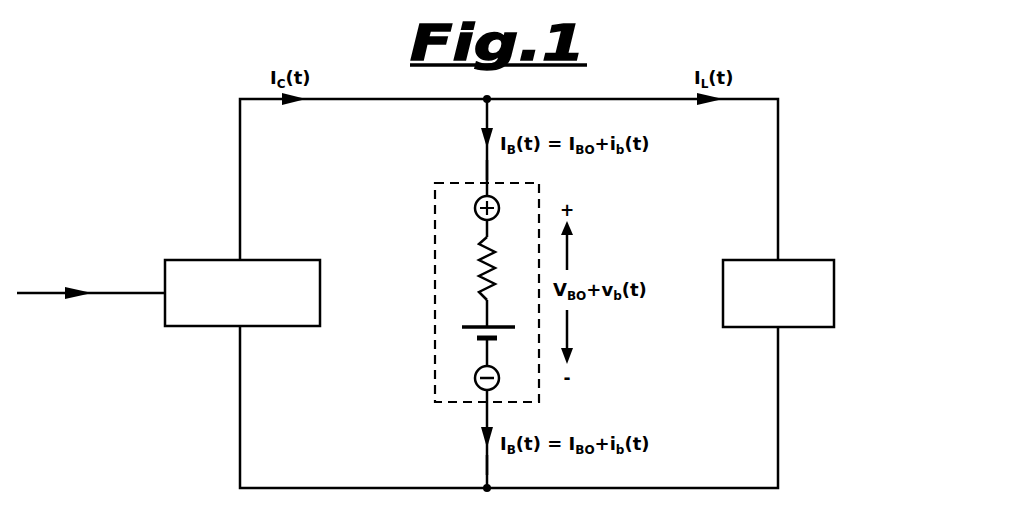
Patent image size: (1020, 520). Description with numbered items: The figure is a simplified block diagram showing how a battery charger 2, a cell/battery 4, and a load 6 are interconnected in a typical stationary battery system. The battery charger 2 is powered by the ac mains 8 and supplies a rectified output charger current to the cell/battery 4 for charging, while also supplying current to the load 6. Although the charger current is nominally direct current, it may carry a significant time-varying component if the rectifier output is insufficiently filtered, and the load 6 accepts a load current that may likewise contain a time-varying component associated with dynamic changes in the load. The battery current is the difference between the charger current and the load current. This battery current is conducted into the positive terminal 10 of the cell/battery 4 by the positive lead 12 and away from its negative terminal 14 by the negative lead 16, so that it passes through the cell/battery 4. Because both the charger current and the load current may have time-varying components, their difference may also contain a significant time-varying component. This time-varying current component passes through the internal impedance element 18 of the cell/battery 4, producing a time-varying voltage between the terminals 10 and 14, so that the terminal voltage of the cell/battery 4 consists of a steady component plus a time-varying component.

The battery charger 2 is at (204, 260).
The cell/battery 4 is at (422, 249).
The load 6 is at (790, 260).
The ac mains 8 is at (97, 293).
The positive terminal 10 is at (475, 208).
The positive lead 12 is at (487, 170).
The negative terminal 14 is at (478, 389).
The negative lead 16 is at (487, 462).
The internal impedance element 18 is at (482, 280).